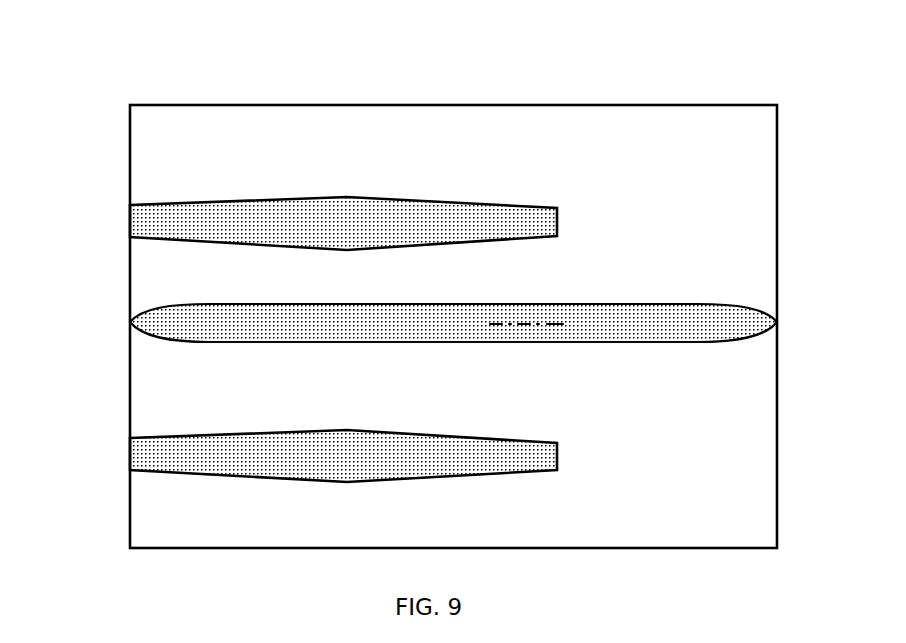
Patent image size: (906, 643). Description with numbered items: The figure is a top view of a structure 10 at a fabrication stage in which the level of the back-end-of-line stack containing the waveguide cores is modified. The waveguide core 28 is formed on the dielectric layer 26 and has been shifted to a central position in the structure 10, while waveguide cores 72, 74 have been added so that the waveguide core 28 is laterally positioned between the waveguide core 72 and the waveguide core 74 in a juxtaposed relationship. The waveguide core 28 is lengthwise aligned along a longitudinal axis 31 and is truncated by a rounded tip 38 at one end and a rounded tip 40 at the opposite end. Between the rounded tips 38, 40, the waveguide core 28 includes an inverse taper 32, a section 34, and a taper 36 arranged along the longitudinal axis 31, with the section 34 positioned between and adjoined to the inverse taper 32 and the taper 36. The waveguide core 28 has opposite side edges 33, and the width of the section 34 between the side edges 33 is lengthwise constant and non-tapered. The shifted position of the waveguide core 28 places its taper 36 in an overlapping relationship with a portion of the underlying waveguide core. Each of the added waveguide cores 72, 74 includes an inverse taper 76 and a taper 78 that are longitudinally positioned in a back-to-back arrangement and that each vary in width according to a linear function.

The structure 10 is at (128, 74).
The dielectric layer 26 is at (187, 516).
The waveguide core 28 is at (716, 372).
The longitudinal axis 31 is at (527, 327).
The inverse taper 32 is at (302, 322).
The side edges 33 is at (592, 302).
The section 34 is at (443, 323).
The taper 36 is at (687, 328).
The rounded tip 38 is at (130, 322).
The rounded tip 40 is at (777, 322).
The waveguide core 72 is at (584, 174).
The waveguide core 74 is at (593, 490).
The inverse taper 76 is at (222, 215).
The taper 78 is at (447, 223).